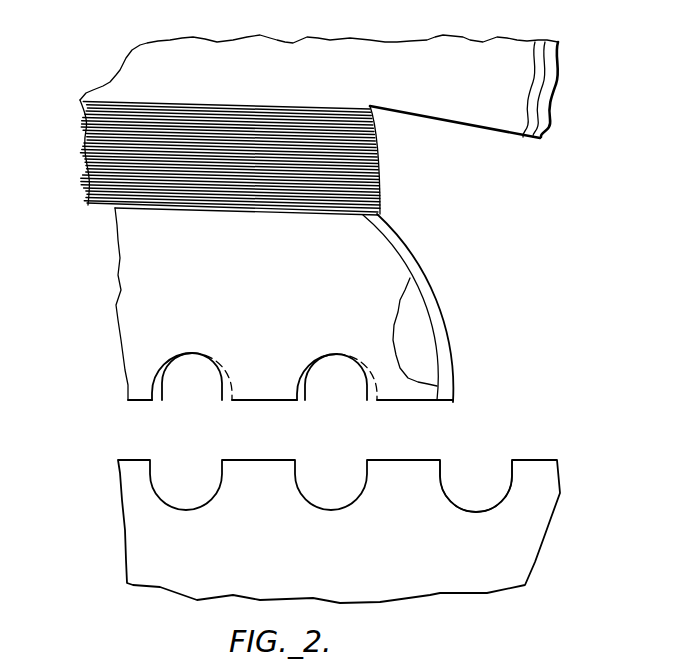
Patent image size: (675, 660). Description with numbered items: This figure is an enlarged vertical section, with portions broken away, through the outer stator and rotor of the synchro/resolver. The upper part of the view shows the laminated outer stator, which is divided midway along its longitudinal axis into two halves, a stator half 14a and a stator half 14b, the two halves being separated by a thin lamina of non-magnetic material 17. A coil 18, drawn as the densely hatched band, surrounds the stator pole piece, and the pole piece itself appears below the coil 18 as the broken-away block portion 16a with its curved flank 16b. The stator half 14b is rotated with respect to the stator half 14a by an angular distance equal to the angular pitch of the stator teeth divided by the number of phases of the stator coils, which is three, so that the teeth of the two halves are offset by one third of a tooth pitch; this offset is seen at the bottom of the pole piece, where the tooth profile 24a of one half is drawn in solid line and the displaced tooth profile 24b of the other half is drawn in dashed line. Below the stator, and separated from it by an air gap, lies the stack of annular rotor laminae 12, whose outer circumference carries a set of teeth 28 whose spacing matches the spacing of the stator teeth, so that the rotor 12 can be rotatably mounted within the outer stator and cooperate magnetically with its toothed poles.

The rotor laminae 12 is at (480, 578).
The stator half 14a is at (468, 108).
The stator half 14b is at (547, 118).
The block body portion 16a is at (147, 240).
The curved edge portion 16b is at (430, 288).
The lamina of non-magnetic material 17 is at (547, 43).
The coil 18 is at (102, 118).
The first semicircular recess 24a is at (273, 403).
The second semicircular recess 24b is at (305, 405).
The teeth 28 is at (425, 462).